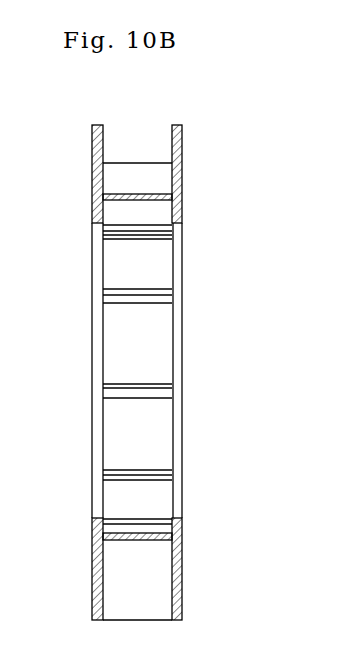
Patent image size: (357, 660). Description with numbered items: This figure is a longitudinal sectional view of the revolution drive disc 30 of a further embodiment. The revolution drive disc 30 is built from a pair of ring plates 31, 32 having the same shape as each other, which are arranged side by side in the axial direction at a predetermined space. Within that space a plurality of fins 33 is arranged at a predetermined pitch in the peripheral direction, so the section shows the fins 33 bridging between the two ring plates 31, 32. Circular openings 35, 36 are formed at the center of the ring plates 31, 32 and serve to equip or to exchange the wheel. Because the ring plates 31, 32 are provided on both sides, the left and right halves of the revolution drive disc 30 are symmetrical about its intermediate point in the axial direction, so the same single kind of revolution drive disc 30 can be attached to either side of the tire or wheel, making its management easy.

The revolution drive disc 30 is at (200, 137).
The ring plate 31 is at (92, 188).
The ring plate 32 is at (182, 205).
The fin 33 is at (145, 248).
The circular opening 35 is at (93, 515).
The circular opening 36 is at (182, 513).